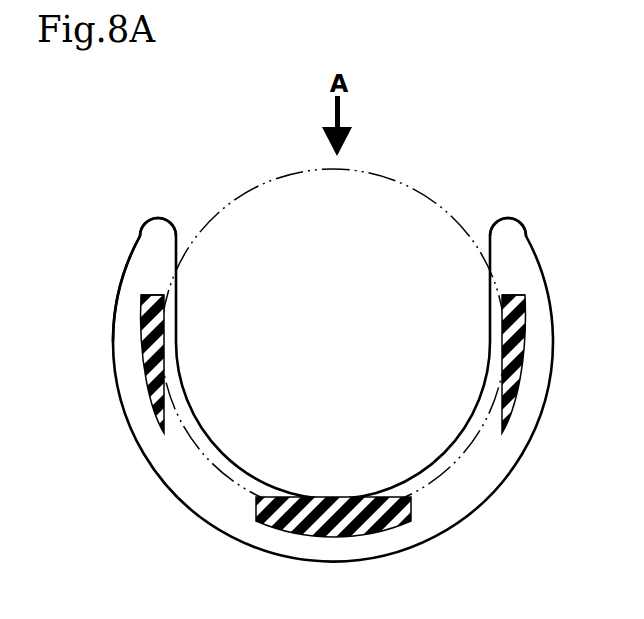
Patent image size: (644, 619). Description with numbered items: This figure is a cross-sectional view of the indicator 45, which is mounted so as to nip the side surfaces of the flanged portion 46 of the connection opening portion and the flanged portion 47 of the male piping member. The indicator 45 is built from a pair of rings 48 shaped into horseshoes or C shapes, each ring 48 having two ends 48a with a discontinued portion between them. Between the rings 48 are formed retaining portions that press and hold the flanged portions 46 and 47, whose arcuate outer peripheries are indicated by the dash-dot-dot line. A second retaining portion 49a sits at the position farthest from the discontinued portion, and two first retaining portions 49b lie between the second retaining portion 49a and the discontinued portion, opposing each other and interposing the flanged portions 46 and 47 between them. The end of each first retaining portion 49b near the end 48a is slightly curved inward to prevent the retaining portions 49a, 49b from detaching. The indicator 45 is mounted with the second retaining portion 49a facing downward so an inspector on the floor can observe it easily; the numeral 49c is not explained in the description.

The indicator 45 is at (130, 277).
The flanged portion 46 is at (349, 307).
The flanged portion 47 is at (423, 192).
The ring 48 is at (477, 480).
The end 48a is at (163, 232).
The second retaining portion 49a is at (302, 527).
The first retaining portion 49b is at (512, 318).
The elastic member top edge 49c is at (510, 293).